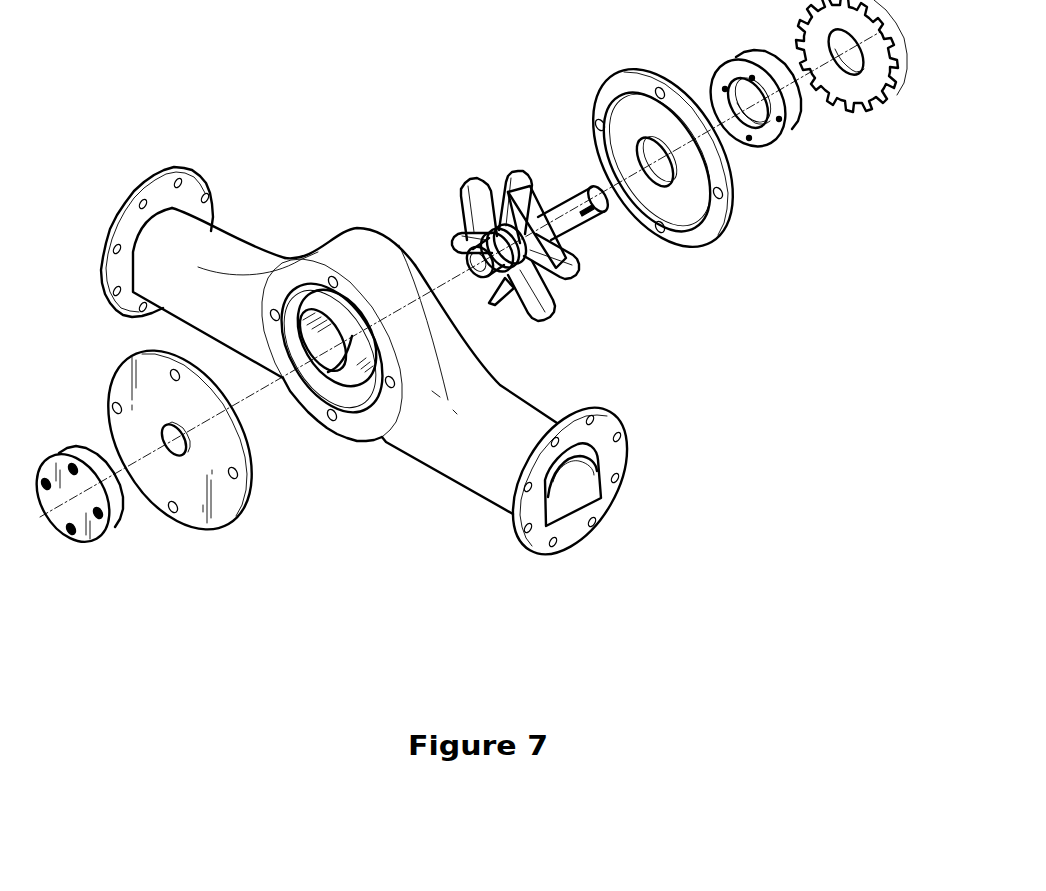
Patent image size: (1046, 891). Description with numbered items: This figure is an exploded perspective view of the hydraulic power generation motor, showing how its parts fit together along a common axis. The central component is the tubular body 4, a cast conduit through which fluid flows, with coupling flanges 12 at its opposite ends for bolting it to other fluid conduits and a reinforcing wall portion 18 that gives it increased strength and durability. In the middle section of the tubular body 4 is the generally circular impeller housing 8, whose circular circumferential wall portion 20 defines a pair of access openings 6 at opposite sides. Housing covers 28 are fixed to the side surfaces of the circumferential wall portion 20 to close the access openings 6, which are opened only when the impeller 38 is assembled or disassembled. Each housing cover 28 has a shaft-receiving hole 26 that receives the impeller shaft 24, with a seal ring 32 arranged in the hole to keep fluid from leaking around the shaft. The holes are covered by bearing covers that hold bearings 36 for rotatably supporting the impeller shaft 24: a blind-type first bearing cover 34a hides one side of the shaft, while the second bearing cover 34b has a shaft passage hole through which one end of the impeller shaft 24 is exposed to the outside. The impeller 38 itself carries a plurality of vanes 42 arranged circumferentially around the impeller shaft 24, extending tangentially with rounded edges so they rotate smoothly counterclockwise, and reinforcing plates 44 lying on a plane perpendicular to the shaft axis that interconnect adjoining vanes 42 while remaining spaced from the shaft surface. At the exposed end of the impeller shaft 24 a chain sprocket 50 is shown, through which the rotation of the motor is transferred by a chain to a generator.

The tubular body 4 is at (479, 386).
The access openings 6 is at (358, 422).
The impeller housing 8 is at (460, 274).
The coupling flanges 12 is at (157, 183).
The reinforcing wall portion 18 is at (598, 492).
The circumferential wall portion 20 is at (347, 247).
The impeller shaft 24 is at (572, 196).
The shaft-receiving hole 26 is at (650, 155).
The housing covers 28 is at (117, 378).
The seal ring 32 is at (567, 285).
The first bearing cover 34a is at (70, 444).
The second bearing cover 34b is at (775, 136).
The bearings 36 is at (545, 316).
The impeller 38 is at (470, 165).
The vanes 42 is at (514, 177).
The reinforcing plates 44 is at (522, 210).
The chain sprocket 50 is at (857, 104).